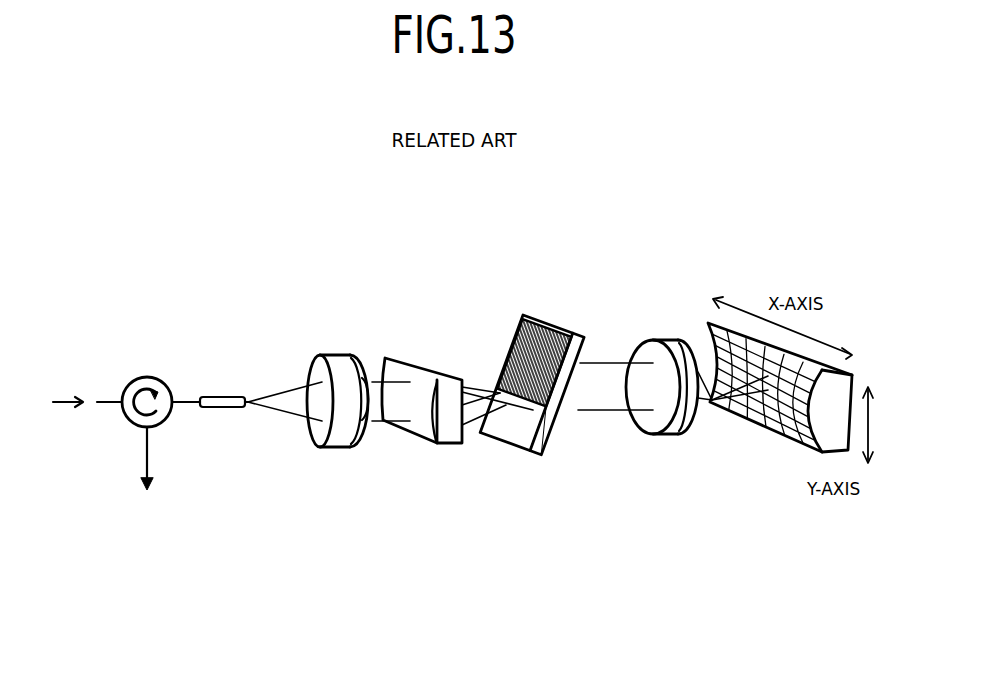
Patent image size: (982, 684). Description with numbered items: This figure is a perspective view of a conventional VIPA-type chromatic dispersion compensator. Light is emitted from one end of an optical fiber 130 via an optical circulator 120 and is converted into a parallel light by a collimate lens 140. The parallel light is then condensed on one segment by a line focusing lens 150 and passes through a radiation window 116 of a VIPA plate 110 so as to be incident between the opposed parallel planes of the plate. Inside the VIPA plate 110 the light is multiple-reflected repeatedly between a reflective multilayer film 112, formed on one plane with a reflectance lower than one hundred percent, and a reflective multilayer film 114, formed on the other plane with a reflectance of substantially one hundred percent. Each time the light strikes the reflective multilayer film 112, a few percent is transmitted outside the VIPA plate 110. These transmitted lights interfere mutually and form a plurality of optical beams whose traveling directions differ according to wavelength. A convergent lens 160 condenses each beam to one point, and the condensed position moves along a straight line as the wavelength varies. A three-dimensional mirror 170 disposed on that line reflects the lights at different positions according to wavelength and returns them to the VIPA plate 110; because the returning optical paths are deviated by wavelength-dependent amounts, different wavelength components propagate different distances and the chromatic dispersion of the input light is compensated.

The VIPA plate 110 is at (564, 312).
The reflective multilayer film 112 is at (558, 428).
The reflective multilayer film 114 is at (522, 347).
The radiation window 116 is at (515, 423).
The optical circulator 120 is at (147, 378).
The optical fiber 130 is at (217, 397).
The collimate lens 140 is at (330, 355).
The line focusing lens 150 is at (403, 357).
The convergent lens 160 is at (668, 342).
The three-dimensional mirror 170 is at (765, 427).